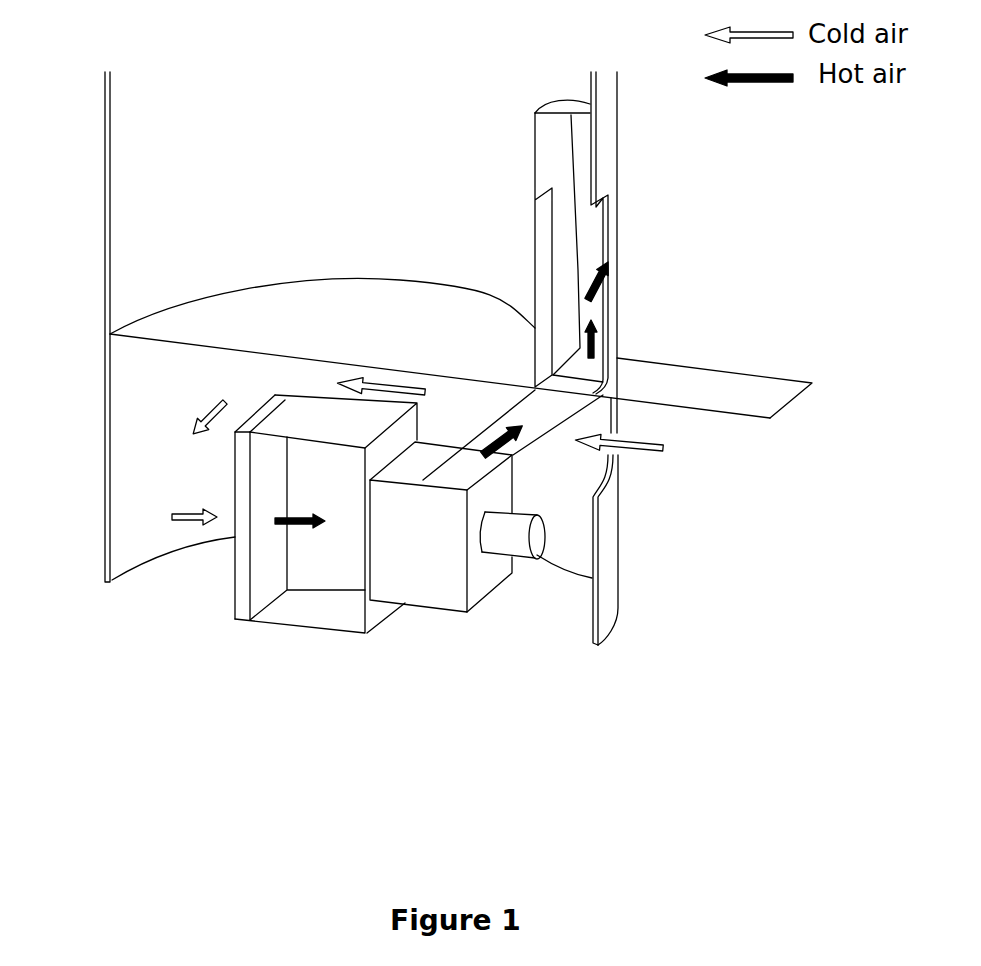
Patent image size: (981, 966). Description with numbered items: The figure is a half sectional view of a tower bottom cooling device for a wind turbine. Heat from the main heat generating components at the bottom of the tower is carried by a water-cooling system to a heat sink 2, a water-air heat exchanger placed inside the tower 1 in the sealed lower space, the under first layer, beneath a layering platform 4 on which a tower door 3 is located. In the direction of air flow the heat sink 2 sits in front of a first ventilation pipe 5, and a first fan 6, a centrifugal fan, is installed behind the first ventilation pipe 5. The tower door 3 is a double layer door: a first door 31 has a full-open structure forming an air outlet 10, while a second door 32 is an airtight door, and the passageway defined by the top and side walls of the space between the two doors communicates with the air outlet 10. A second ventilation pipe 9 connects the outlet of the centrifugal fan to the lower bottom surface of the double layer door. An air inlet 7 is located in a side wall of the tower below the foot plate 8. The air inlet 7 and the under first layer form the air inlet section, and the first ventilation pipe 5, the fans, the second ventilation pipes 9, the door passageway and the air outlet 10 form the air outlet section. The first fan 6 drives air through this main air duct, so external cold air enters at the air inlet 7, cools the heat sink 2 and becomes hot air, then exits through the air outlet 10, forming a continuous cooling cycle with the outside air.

The tower 1 is at (100, 147).
The heat sink 2 is at (233, 610).
The tower door 3 is at (623, 252).
The first door 31 is at (608, 228).
The second door 32 is at (545, 207).
The layering platform 4 is at (195, 310).
The first ventilation pipe 5 is at (315, 633).
The first fan 6 is at (423, 608).
The air inlet 7 is at (617, 480).
The foot plate 8 is at (680, 368).
The second ventilation pipe 9 is at (510, 481).
The air outlet 10 is at (598, 302).